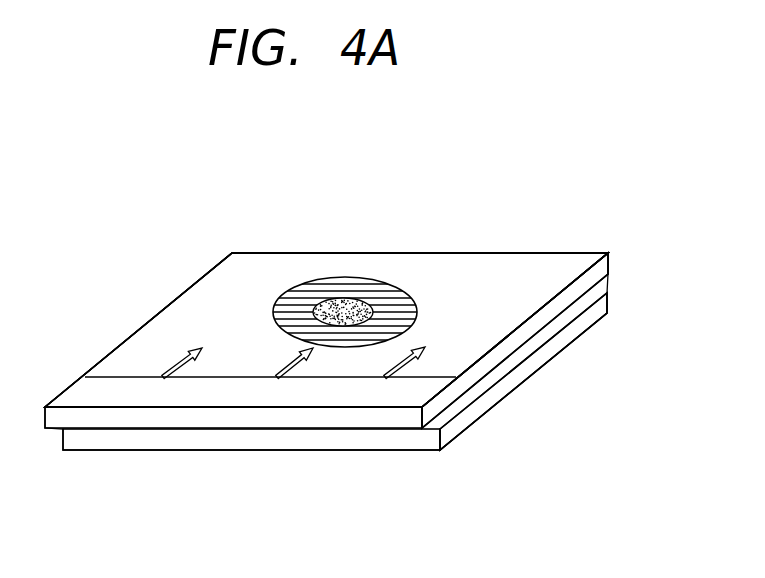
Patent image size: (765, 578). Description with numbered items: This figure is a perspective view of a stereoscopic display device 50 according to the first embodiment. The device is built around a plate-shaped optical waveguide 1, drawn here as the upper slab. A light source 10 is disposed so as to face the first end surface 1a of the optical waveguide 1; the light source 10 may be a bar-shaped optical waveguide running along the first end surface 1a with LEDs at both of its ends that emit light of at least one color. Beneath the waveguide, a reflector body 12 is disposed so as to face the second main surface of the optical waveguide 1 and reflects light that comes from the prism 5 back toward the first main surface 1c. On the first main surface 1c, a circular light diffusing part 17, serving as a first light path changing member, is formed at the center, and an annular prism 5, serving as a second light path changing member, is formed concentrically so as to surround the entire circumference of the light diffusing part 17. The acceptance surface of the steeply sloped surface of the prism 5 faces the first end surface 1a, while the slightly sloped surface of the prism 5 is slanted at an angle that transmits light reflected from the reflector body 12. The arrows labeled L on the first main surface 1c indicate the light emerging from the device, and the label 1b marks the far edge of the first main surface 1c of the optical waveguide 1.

The stereoscopic display device 50 is at (527, 165).
The optical waveguide 1 is at (580, 243).
The first end surface 1a is at (447, 377).
The top surface of substrate 1b is at (376, 252).
The first main surface 1c is at (177, 312).
The prism 5 is at (288, 307).
The light diffusing part 17 is at (342, 300).
The light source 10 is at (53, 431).
The reflector body 12 is at (605, 305).
The light beam L is at (170, 368).